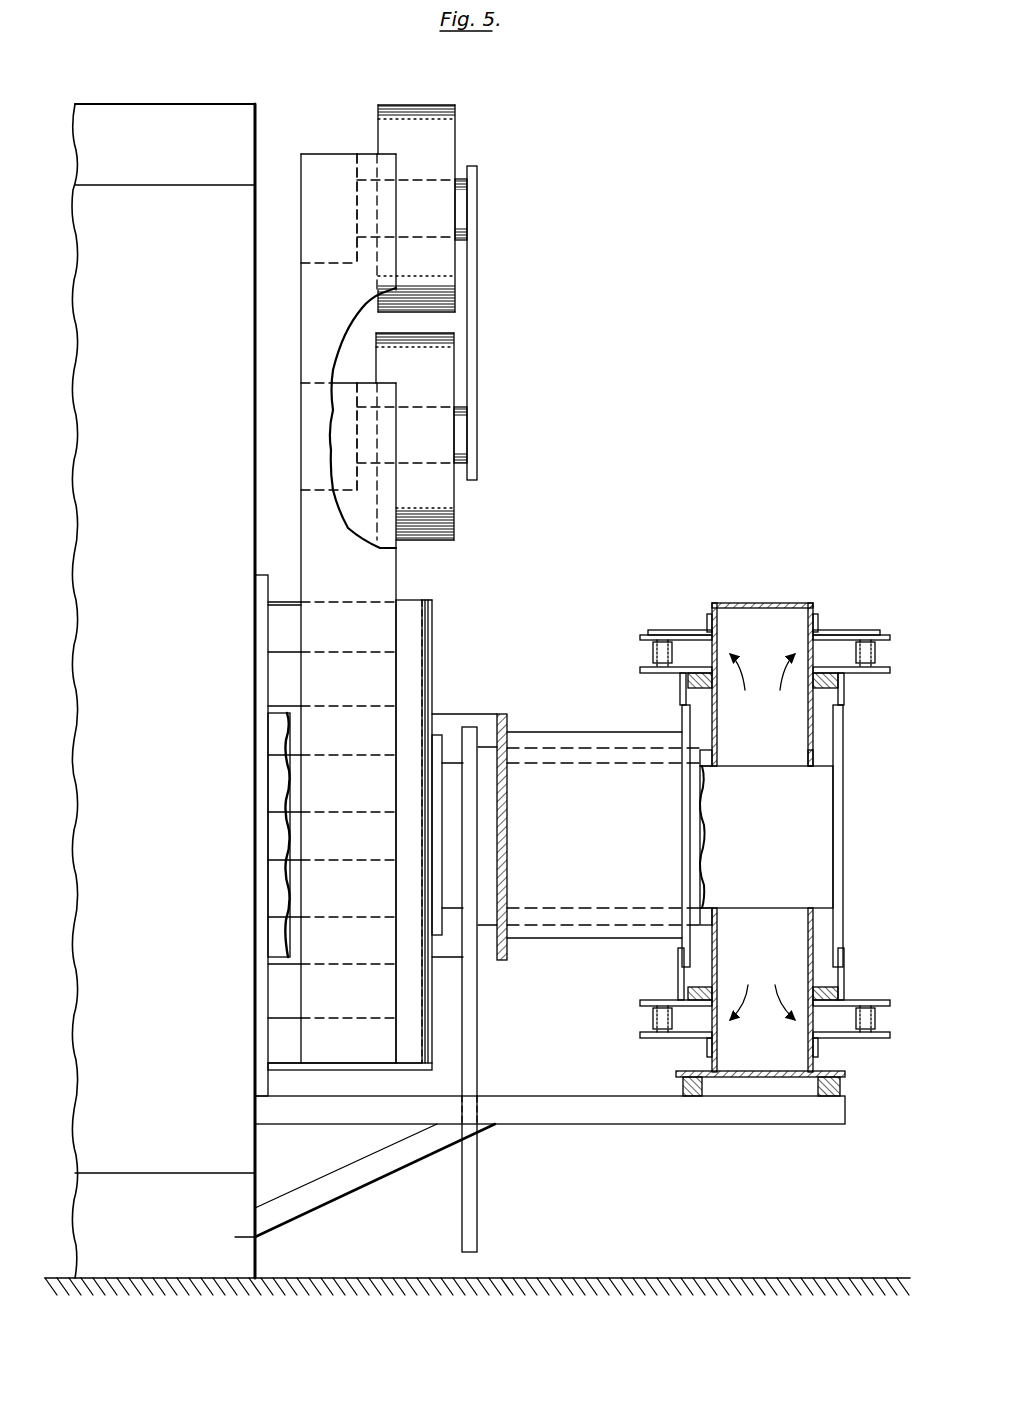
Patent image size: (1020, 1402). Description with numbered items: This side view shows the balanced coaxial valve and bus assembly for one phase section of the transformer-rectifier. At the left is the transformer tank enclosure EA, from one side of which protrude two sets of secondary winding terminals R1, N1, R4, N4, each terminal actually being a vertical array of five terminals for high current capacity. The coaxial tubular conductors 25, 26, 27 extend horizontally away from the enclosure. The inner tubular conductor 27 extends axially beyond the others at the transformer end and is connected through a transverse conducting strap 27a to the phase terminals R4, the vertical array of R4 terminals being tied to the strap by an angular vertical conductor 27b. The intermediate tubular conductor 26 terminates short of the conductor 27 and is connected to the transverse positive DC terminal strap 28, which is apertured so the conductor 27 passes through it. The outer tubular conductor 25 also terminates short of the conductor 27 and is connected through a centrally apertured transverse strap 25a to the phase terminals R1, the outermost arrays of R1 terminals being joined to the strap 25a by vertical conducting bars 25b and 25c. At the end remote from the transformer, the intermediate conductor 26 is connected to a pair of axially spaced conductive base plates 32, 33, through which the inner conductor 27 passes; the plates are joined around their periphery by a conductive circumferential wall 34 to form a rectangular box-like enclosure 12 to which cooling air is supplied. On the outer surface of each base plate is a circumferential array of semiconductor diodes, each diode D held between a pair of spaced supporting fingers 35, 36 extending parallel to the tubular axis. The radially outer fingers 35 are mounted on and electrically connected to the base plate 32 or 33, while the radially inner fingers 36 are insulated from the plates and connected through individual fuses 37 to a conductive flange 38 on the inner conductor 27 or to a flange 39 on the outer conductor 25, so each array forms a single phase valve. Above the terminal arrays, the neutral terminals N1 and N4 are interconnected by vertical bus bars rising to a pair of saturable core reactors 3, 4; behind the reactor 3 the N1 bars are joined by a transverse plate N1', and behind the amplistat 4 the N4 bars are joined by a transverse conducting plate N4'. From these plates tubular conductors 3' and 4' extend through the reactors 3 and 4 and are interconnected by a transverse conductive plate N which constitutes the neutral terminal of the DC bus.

The transformer tank enclosure EA is at (186, 122).
The saturable core reactor 3 is at (435, 208).
The tubular conductor 3' is at (486, 209).
The transverse conductive plate N is at (470, 297).
The neutral terminal N1 is at (359, 608).
The transverse plate N1' is at (331, 208).
The neutral terminal N4 is at (378, 476).
The transverse conducting plate N4' is at (307, 436).
The saturable core reactor 4 is at (433, 439).
The tubular conductor 4' is at (486, 435).
The phase terminal R4 is at (410, 634).
The angular vertical conductor 27b is at (432, 682).
The vertical conducting bar 25c is at (487, 724).
The outer tubular conductor 25 is at (571, 742).
The transverse strap 25a is at (508, 787).
The vertical conducting bar 25b is at (272, 786).
The transverse conducting strap 27a is at (434, 790).
The inner tubular conductor 27 is at (820, 798).
The positive DC terminal strap 28 is at (470, 824).
The intermediate tubular conductor 26 is at (489, 875).
The phase terminal R1 is at (276, 888).
The conductive flange 39 is at (683, 811).
The conductive flange 38 is at (838, 861).
The duct 12 is at (806, 600).
The conductive circumferential wall 34 is at (761, 604).
The conductive base plate 32 is at (719, 640).
The conductive base plate 33 is at (806, 729).
The radially outer diode supporting finger 35 is at (880, 634).
The radially inner diode supporting finger 36 is at (880, 674).
The fuse 37 is at (679, 688).
The diode D is at (652, 653).